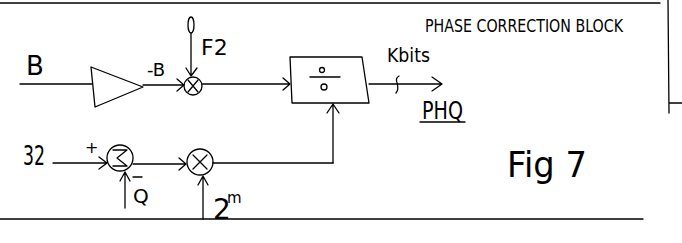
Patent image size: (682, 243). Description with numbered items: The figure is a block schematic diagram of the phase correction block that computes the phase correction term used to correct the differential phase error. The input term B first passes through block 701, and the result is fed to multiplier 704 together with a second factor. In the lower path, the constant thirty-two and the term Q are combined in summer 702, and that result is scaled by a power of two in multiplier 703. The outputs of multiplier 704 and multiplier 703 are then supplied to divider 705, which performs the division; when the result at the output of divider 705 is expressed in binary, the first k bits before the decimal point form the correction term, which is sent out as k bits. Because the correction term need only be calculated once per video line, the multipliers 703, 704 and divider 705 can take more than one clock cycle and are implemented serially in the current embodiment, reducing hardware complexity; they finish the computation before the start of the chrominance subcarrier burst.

The inverter (gain -1) 701 is at (117, 75).
The summer 702 is at (133, 144).
The multiplier 703 is at (217, 151).
The multiplier 704 is at (218, 75).
The divider 705 is at (329, 65).